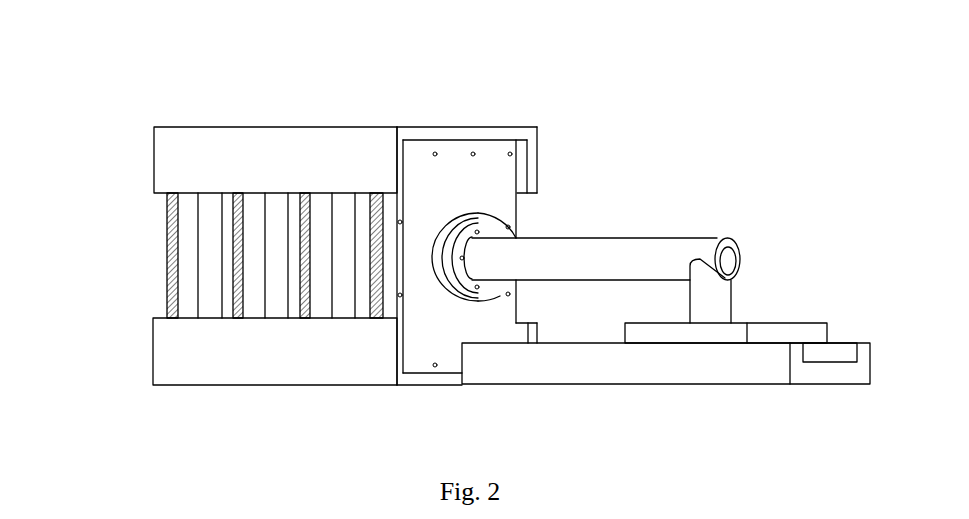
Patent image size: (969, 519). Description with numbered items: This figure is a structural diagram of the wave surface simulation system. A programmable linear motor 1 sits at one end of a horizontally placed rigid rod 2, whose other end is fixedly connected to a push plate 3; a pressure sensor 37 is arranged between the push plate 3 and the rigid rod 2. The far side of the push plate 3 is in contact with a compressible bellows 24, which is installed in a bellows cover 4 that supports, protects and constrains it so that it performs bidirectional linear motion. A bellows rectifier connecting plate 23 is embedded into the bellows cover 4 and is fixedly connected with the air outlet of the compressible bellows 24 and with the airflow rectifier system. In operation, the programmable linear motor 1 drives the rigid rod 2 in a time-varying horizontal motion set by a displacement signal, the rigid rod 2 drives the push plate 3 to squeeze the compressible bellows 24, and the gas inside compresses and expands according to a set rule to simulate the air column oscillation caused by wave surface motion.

The programmable linear motor 1 is at (843, 373).
The rigid rod 2 is at (487, 223).
The push plate 3 is at (449, 228).
The pressure sensor 37 is at (452, 222).
The bellows cover 4 is at (282, 172).
The bellows rectifier connecting plate 23 is at (167, 205).
The compressible bellows 24 is at (287, 292).